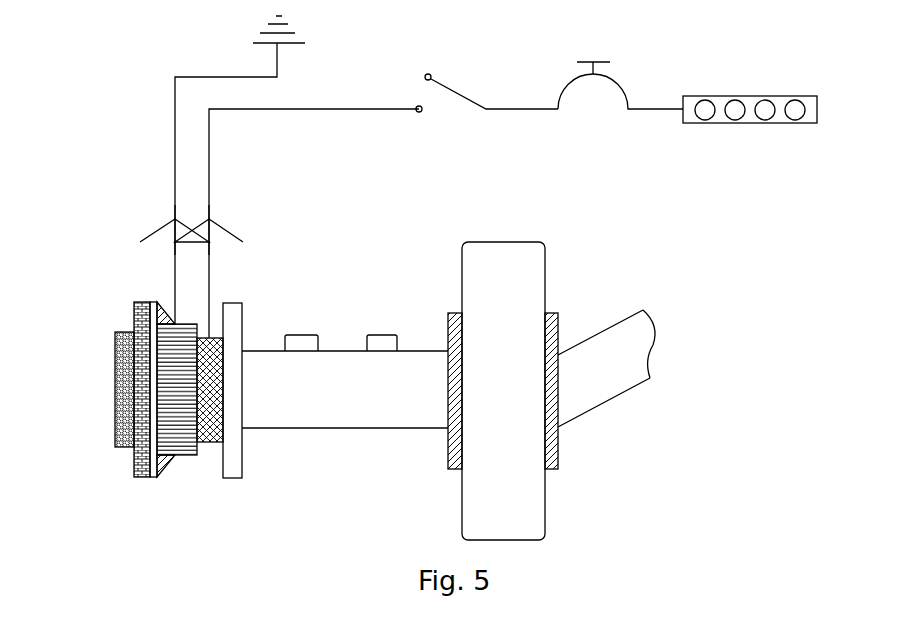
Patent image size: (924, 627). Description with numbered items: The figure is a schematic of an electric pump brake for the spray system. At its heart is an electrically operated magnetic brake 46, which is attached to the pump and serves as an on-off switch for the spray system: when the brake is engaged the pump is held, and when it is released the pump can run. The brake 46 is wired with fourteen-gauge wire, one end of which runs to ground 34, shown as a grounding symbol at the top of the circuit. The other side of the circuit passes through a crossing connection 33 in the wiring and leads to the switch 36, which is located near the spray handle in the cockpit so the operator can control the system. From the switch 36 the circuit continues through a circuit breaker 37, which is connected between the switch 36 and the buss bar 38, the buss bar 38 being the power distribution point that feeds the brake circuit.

The electrical connection crossing 33 is at (160, 225).
The ground 34 is at (250, 33).
The switch 36 is at (457, 96).
The circuit breaker 37 is at (620, 90).
The buss bar 38 is at (748, 123).
The magnetic brake 46 is at (125, 465).